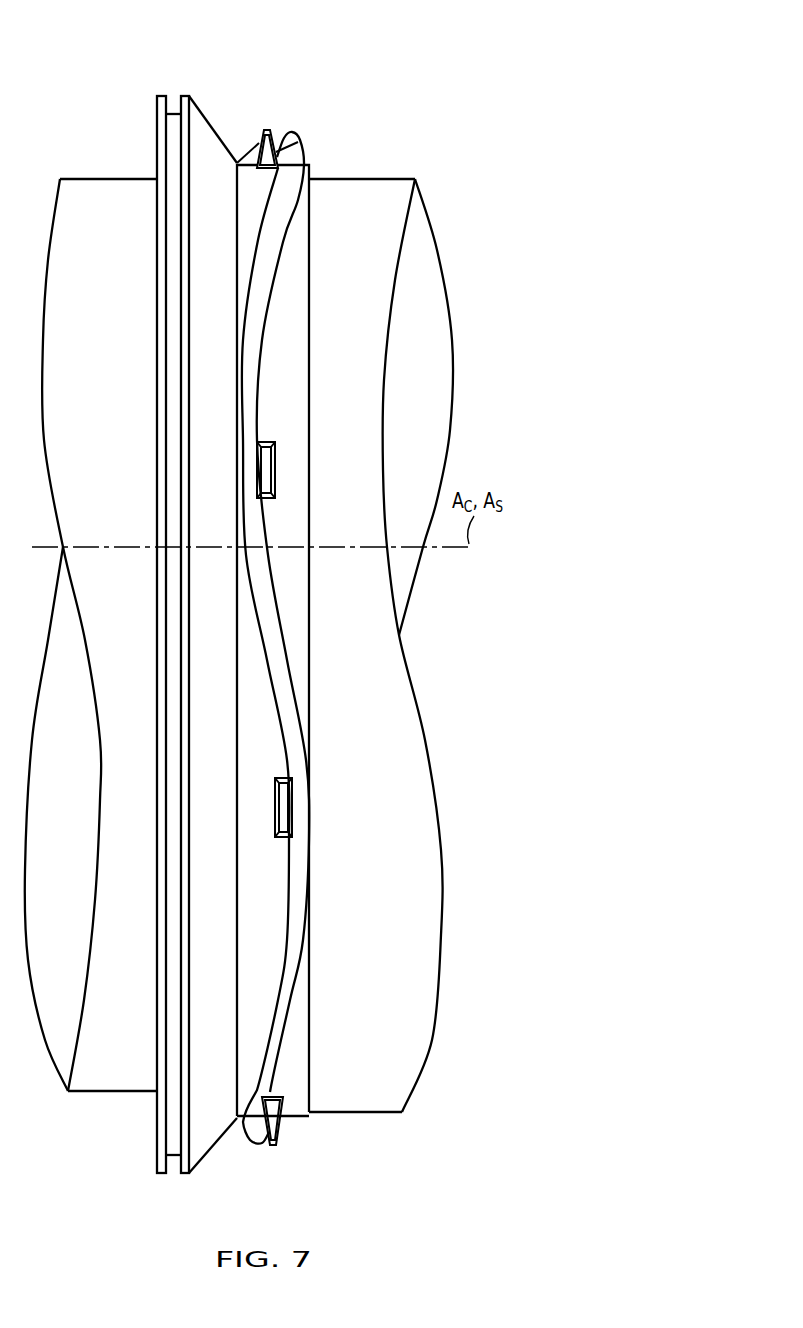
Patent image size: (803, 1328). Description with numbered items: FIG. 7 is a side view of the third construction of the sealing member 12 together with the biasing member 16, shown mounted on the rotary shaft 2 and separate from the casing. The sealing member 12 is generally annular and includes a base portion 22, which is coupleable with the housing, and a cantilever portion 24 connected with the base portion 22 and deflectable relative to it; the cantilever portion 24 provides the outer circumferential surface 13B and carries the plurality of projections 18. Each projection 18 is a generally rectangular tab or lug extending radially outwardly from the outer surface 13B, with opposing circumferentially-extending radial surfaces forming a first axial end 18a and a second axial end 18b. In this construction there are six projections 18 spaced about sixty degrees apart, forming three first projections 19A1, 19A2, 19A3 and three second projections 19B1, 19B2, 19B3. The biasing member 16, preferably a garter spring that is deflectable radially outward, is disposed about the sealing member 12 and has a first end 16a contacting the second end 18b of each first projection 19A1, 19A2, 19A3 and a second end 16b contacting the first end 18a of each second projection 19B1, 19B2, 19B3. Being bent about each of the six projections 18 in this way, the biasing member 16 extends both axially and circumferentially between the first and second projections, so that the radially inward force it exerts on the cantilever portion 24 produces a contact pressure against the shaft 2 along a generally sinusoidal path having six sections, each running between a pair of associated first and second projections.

The rotary shaft 2 is at (394, 1118).
The sealing member 12 is at (167, 601).
The outer circumferential surface 13B is at (297, 990).
The biasing member 16 is at (284, 638).
The biasing member first end 16a is at (246, 565).
The biasing member second end 16b is at (283, 245).
The projection 18 is at (253, 130).
The first axial end 18a is at (237, 163).
The second axial end 18b is at (285, 155).
The first one of the three first projections 19A1 is at (265, 128).
The second one of the three first projections 19A2 is at (275, 795).
The third one of the three first projections 19A3 is at (273, 842).
The first one of the three second projections 19B1 is at (280, 447).
The second one of the three second projections 19B2 is at (283, 1133).
The third one of the three second projections 19B3 is at (285, 472).
The base portion 22 is at (158, 1165).
The cantilever portion 24 is at (198, 1165).